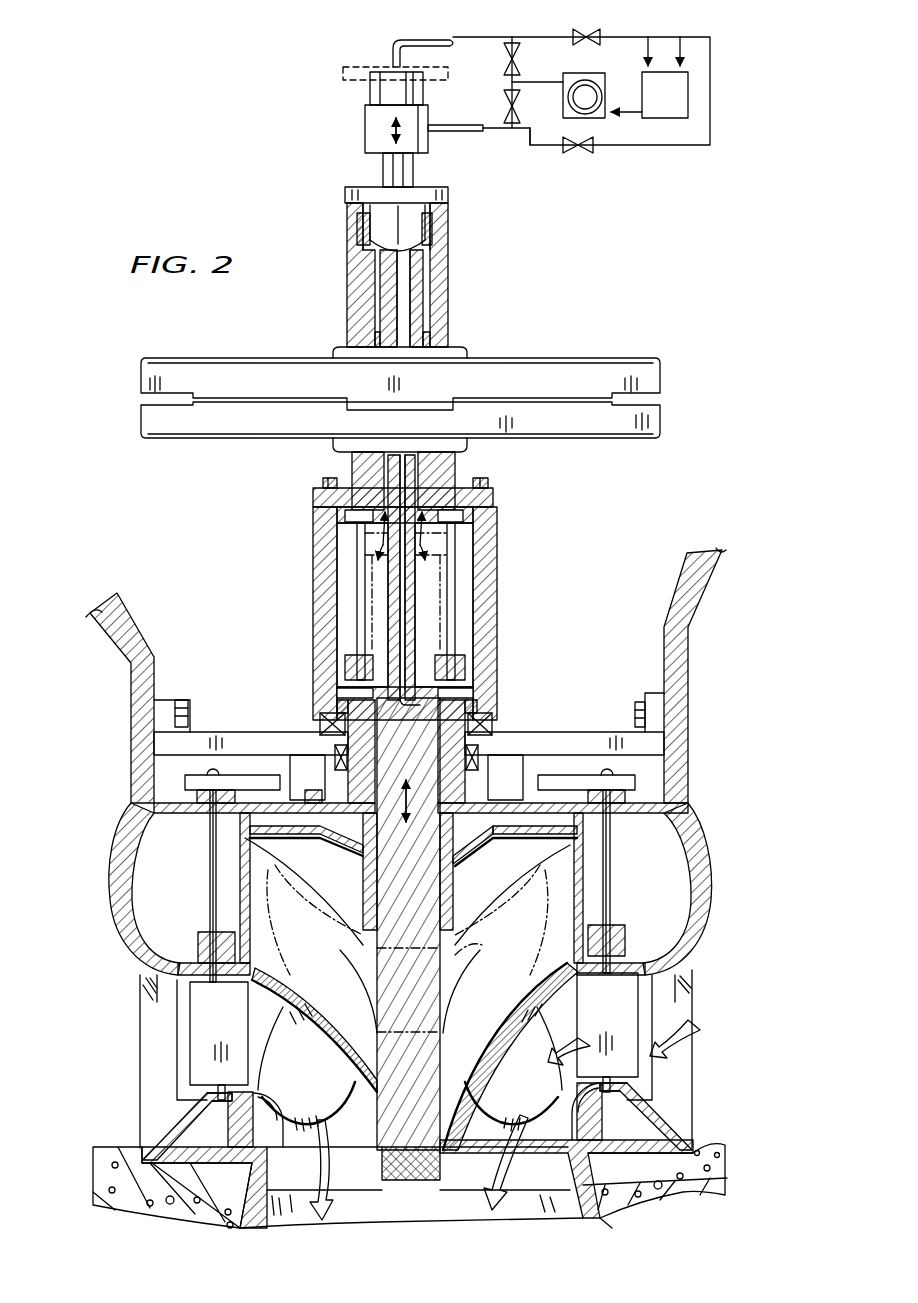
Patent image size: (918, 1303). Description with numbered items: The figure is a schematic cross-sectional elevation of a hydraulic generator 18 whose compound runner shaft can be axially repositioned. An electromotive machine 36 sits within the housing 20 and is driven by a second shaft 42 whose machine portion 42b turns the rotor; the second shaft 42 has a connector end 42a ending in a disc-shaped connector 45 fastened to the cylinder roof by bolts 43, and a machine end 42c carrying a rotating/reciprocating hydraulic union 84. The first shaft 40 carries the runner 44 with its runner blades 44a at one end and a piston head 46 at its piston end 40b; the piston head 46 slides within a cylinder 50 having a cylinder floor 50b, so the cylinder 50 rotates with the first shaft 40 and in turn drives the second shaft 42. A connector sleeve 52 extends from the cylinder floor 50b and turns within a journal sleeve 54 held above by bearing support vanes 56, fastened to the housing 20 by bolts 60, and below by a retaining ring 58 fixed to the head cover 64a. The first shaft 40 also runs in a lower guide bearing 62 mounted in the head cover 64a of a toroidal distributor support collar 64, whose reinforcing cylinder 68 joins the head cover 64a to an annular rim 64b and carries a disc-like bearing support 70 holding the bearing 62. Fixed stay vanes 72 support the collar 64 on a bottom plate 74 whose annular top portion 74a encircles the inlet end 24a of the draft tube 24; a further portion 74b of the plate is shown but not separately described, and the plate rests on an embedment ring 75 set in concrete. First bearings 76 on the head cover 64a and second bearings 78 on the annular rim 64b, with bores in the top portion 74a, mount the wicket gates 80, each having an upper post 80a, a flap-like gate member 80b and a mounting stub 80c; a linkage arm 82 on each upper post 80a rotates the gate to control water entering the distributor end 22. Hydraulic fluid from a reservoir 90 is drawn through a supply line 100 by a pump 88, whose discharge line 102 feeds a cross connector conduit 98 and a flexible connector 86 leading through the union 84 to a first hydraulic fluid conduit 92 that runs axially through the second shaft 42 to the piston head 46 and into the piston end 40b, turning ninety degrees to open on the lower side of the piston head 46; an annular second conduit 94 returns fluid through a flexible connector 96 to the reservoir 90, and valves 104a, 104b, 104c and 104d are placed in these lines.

The generator 18 is at (172, 556).
The housing 20 is at (140, 684).
The distributor end 22 is at (68, 940).
The draft tube 24 is at (440, 1216).
The inlet end of draft tube 24a is at (383, 1186).
The electromotive machine 36 is at (600, 378).
The first shaft 40 is at (422, 895).
The piston end of first shaft 40b is at (355, 715).
The second shaft 42 is at (456, 300).
The connector end of second shaft 42a is at (365, 482).
The machine portion of second shaft 42b is at (365, 457).
The machine end of second shaft 42c is at (440, 224).
The bolts 43 is at (318, 488).
The runner 44 is at (470, 950).
The runner blades 44a is at (318, 1092).
The disc-shaped connector 45 is at (490, 498).
The piston head 46 is at (476, 560).
The cylinder 50 is at (505, 580).
The cylinder floor 50b is at (482, 705).
The connector sleeve 52 is at (355, 736).
The journal sleeve 54 is at (482, 793).
The bearing support vanes 56 is at (165, 745).
The retaining ring 58 is at (316, 795).
The bolts 60 is at (181, 700).
The lower guide bearing 62 is at (463, 842).
The distributor support collar 64 is at (714, 878).
The head cover 64a is at (262, 825).
The annular rim 64b is at (414, 1029).
The reinforcing cylinder 68 is at (555, 895).
The bearing support 70 is at (348, 848).
The fixed stay vanes 72 is at (165, 1005).
The bottom plate 74 is at (165, 1122).
The top portion of bottom plate 74a is at (208, 1097).
The guide block 74b is at (245, 1160).
The embedment ring 75 is at (605, 1192).
The first bearings 76 is at (155, 806).
The second bearings 78 is at (200, 945).
The wicket gates 80 is at (200, 906).
The upper post 80a is at (212, 872).
The gate member 80b is at (188, 1040).
The mounting stub 80c is at (222, 1092).
The linkage arm 82 is at (250, 782).
The hydraulic union 84 is at (368, 126).
The flexible connector 86 is at (388, 42).
The pump 88 is at (588, 92).
The hydraulic fluid reservoir 90 is at (680, 108).
The first hydraulic fluid conduit 92 is at (388, 283).
The second hydraulic fluid conduit 94 is at (420, 290).
The flexible connector 96 is at (445, 132).
The cross connector conduit 98 is at (514, 80).
The hydraulic fluid supply line 100 is at (630, 114).
The pump discharge line 102 is at (530, 142).
The valve 104a is at (576, 33).
The valve 104b is at (505, 46).
The valve 104c is at (506, 97).
The valve 104d is at (580, 150).